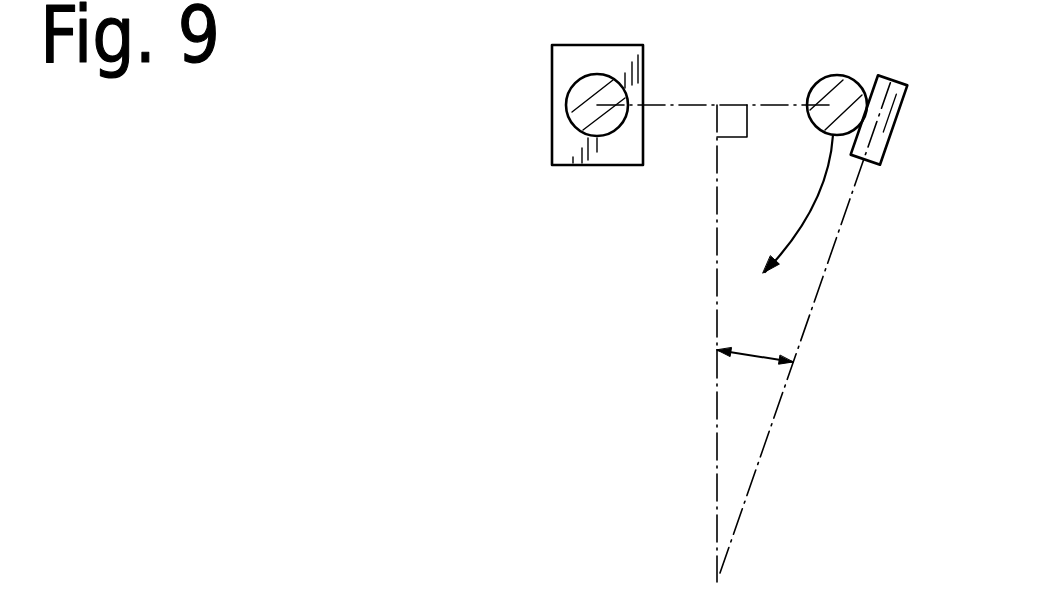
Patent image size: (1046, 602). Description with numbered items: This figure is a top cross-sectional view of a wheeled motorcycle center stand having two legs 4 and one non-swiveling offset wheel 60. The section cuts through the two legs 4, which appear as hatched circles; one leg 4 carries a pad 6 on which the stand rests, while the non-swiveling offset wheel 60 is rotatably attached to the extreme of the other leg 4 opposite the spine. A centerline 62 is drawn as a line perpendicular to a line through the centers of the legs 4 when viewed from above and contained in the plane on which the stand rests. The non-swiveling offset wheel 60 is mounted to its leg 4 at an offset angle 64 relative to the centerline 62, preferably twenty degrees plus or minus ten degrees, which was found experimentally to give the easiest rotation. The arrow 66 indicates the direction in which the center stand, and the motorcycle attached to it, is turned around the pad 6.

The leg 4 is at (578, 86).
The pad 6 is at (567, 135).
The non-swiveling offset wheel 60 is at (887, 146).
The centerline 62 is at (717, 247).
The offset angle 64 is at (757, 353).
The arrow 66 is at (817, 203).